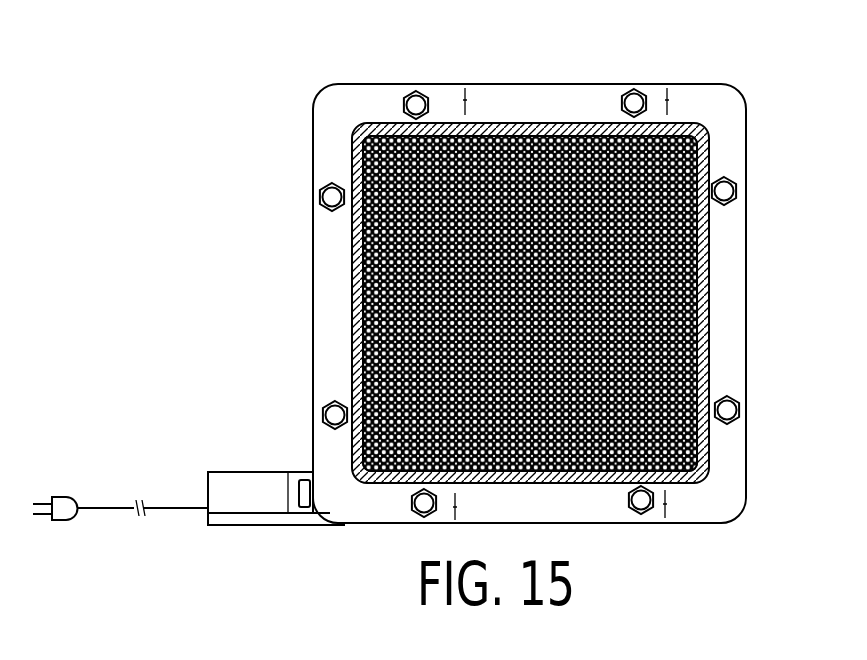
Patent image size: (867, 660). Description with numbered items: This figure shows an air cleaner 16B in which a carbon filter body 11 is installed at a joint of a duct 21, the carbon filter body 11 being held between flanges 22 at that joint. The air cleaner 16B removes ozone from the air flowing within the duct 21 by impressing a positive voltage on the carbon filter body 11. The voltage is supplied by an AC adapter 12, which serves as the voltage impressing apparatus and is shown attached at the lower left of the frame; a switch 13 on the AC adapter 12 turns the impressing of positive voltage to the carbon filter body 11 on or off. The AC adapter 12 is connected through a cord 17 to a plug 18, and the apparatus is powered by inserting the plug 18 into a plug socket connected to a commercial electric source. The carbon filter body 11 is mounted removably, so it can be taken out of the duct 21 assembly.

The carbon filter body 11 is at (382, 261).
The AC adapter 12 is at (225, 478).
The switch 13 is at (305, 508).
The air cleaner 16B is at (166, 297).
The cord 17 is at (153, 511).
The plug 18 is at (62, 497).
The duct 21 is at (708, 223).
The flange 22 is at (733, 100).